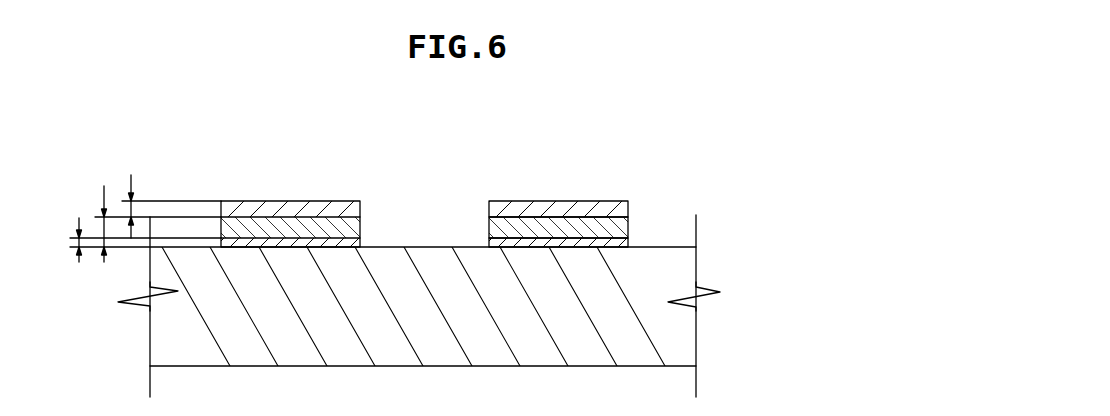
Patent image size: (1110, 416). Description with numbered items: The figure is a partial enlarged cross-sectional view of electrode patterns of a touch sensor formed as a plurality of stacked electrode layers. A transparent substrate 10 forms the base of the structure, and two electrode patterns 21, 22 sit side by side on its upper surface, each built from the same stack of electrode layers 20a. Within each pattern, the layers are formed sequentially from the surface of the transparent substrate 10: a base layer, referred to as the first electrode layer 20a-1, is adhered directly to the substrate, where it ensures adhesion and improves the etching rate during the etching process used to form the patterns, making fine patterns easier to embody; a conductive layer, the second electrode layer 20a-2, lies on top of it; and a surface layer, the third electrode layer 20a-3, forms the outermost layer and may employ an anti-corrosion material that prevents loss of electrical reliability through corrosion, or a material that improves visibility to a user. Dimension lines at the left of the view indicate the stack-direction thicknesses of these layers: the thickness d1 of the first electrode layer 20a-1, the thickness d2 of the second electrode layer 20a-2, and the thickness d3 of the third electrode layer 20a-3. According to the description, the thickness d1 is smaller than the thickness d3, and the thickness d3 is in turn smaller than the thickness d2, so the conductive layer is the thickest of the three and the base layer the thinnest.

The transparent substrate 10 is at (667, 338).
The first electrode pattern 21 is at (304, 193).
The second electrode pattern 22 is at (670, 197).
The electrode layers 20a is at (670, 230).
The first electrode layer 20a-1 is at (610, 245).
The second electrode layer 20a-2 is at (618, 232).
The third electrode layer 20a-3 is at (612, 208).
The thickness of the first electrode layer d1 is at (66, 233).
The thickness of the second electrode layer d2 is at (90, 221).
The thickness of the third electrode layer d3 is at (118, 195).